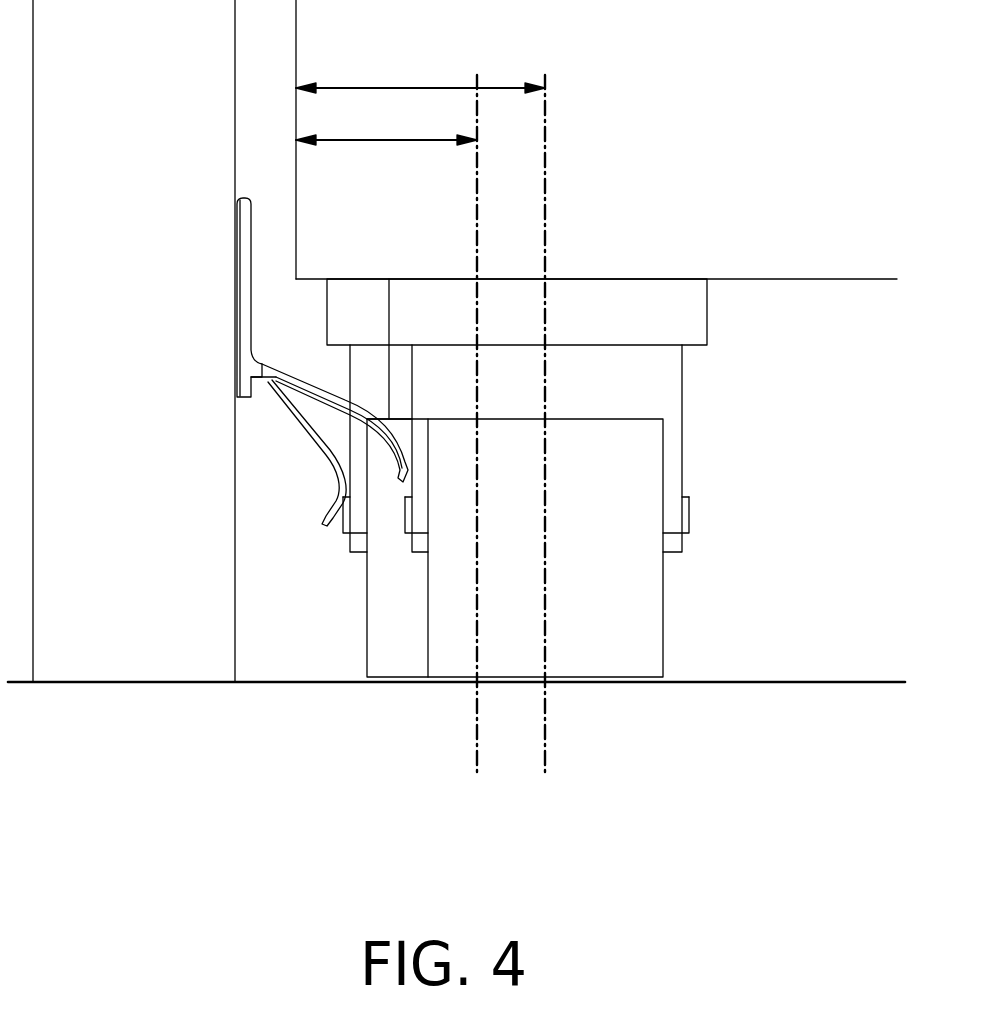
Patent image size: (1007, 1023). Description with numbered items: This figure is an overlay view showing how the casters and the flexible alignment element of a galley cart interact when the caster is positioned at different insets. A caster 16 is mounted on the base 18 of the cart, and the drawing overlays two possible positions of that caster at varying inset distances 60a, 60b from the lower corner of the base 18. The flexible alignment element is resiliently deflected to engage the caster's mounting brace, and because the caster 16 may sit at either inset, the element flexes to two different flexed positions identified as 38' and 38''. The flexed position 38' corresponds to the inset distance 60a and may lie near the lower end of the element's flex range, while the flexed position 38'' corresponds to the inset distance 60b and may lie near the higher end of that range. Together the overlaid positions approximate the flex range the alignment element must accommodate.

The caster 16 is at (592, 657).
The base 18 is at (787, 279).
The flexed position of flexible alignment element 38' is at (349, 341).
The flexed position of flexible alignment element 38'' is at (256, 456).
The inset distance 60a is at (375, 86).
The inset distance 60b is at (350, 138).